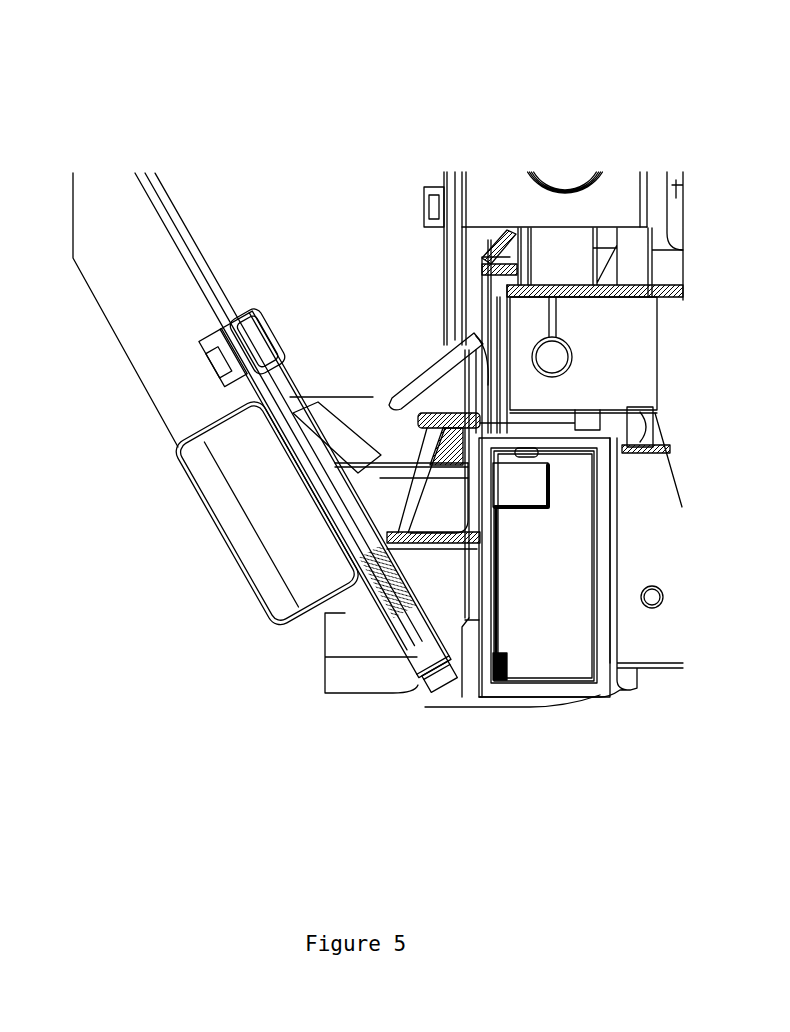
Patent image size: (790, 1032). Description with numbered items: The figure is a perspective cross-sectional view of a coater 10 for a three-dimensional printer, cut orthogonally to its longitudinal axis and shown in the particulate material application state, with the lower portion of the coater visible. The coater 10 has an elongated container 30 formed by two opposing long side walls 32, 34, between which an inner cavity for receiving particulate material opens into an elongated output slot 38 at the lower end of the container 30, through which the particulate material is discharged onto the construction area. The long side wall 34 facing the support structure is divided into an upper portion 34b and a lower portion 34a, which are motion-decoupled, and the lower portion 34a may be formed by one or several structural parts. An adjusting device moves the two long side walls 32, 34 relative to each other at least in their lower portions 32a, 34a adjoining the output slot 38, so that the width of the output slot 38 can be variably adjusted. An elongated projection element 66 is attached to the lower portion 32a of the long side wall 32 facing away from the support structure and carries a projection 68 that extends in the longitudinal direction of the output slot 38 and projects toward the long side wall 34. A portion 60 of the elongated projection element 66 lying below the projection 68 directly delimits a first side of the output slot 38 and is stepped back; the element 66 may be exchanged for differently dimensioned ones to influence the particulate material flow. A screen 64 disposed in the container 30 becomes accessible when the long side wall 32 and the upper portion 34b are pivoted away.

The coater 10 is at (179, 85).
The container 30 is at (371, 464).
The long side wall 32 is at (355, 565).
The lower portion of the long side wall 32a is at (217, 317).
The long side wall 34 is at (509, 448).
The lower portion of the long side wall 34a is at (500, 447).
The upper portion of the long side wall 34b is at (466, 300).
The output slot 38 is at (428, 700).
The stepped-back portion 60 is at (433, 695).
The screen 64 is at (400, 530).
The elongated projection element 66 is at (362, 667).
The projection 68 is at (422, 690).